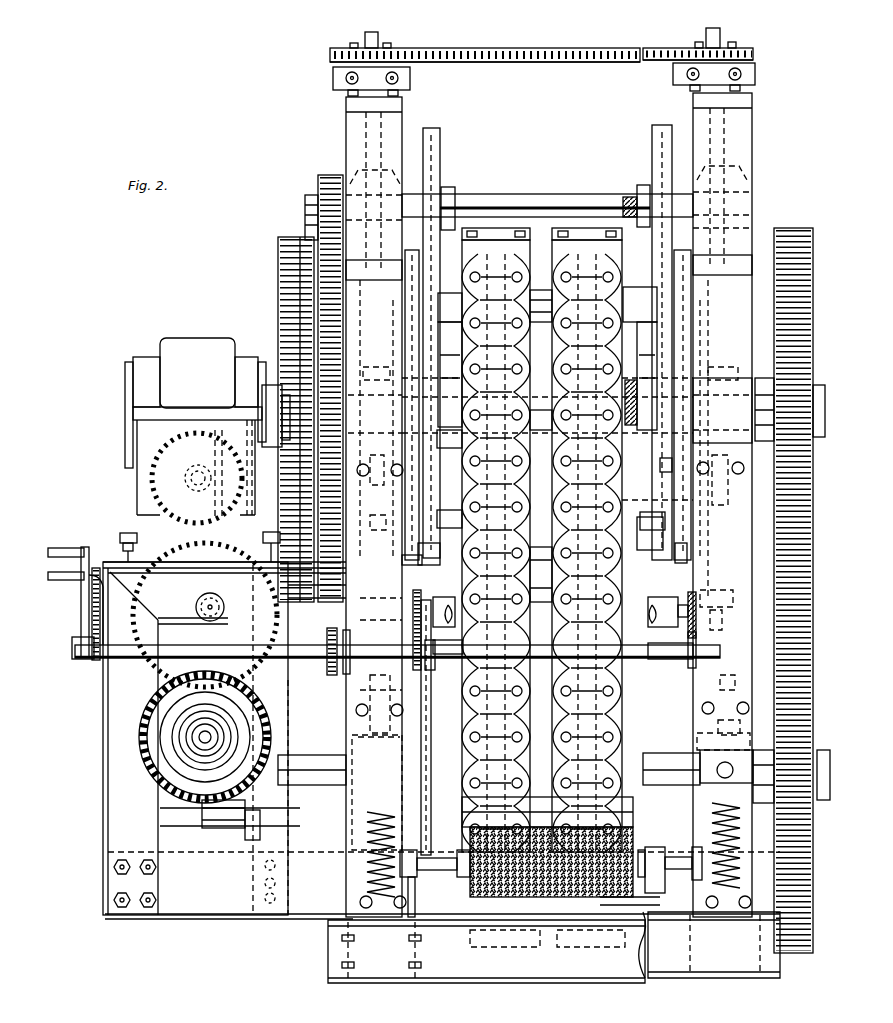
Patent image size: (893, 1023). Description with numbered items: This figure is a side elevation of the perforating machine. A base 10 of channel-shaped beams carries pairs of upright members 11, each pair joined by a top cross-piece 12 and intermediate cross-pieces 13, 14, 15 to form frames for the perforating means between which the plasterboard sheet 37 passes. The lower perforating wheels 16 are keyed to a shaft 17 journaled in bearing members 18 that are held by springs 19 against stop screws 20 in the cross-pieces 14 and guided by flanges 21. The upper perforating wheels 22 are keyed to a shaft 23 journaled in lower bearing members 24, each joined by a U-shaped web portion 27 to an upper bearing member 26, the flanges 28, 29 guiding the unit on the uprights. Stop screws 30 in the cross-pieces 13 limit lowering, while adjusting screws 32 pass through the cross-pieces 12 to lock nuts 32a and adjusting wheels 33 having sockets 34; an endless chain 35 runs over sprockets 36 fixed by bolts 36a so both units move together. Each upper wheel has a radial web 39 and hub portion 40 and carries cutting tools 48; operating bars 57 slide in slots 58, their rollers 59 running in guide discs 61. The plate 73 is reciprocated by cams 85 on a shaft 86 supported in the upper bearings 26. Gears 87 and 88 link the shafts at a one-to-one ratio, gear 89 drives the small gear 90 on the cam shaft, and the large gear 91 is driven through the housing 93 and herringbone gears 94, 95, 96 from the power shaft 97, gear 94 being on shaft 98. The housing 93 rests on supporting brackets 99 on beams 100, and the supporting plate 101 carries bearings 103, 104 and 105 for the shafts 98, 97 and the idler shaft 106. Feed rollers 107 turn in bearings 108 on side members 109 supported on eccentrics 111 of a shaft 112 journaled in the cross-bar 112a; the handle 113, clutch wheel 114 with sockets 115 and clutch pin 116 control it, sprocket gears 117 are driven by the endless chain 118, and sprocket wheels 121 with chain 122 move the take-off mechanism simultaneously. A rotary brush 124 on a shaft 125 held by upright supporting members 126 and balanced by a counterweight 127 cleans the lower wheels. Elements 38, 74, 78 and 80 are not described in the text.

The base 10 is at (525, 970).
The upright member 11 is at (352, 155).
The top cross-piece 12 is at (346, 100).
The intermediate cross-piece 13 is at (388, 456).
The intermediate cross-piece 14 is at (356, 709).
The intermediate cross-piece 15 is at (360, 900).
The lower perforating wheel 16 is at (530, 683).
The shaft 17 is at (665, 760).
The bearing member 18 is at (357, 737).
The spring 19 is at (367, 830).
The stop screw 20 is at (368, 688).
The flange 21 is at (350, 740).
The upper perforating wheel 22 is at (594, 320).
The shaft 23 is at (547, 369).
The lower bearing member 24 is at (750, 358).
The upper bearing member 26 is at (404, 180).
The U-shaped web portion 27 is at (393, 308).
The flange 28 is at (348, 370).
The flange 29 is at (346, 178).
The stop screw 30 is at (740, 490).
The adjusting screw 32 is at (376, 38).
The lock nut 32a is at (346, 115).
The adjusting wheel 33 is at (333, 77).
The socket 34 is at (400, 78).
The endless chain 35 is at (577, 48).
The sprocket 36 is at (402, 50).
The bolt 36a is at (355, 47).
The plasterboard sheet 37 is at (664, 591).
The bar 38 is at (541, 515).
The radial web 39 is at (547, 362).
The hub portion 40 is at (636, 402).
The cutting tool 48 is at (478, 232).
The operating bar 57 is at (650, 515).
The slot 58 is at (541, 314).
The roller 59 is at (450, 307).
The guide disc 61 is at (668, 346).
The plate 73 is at (414, 262).
The bracket 74 is at (420, 558).
The bracket 78 is at (660, 548).
The block 80 is at (660, 465).
The rotatable cam 85 is at (432, 167).
The shaft 86 is at (495, 208).
The gear 87 is at (800, 230).
The gear 88 is at (790, 600).
The gear 89 is at (305, 230).
The small gear 90 is at (326, 175).
The large gear 91 is at (262, 262).
The housing 93 is at (198, 358).
The herringbone gear 94 is at (158, 470).
The herringbone gear 95 is at (270, 676).
The herringbone gear 96 is at (202, 815).
The power shaft 97 is at (198, 748).
The shaft 98 is at (182, 488).
The supporting bracket 99 is at (108, 565).
The channel-shaped beam 100 is at (175, 917).
The supporting plate 101 is at (346, 600).
The bearing 103 is at (175, 505).
The bearing 104 is at (193, 768).
The bearing 105 is at (215, 586).
The shaft 106 is at (204, 606).
The roller 107 is at (661, 603).
The bearing 108 is at (395, 600).
The side member 109 is at (551, 618).
The eccentric 111 is at (455, 648).
The shaft 112 is at (455, 658).
The cross-bar 112a is at (700, 595).
The operating handle 113 is at (65, 548).
The clutch wheel 114 is at (92, 666).
The socket 115 is at (72, 658).
The clutch pin 116 is at (68, 585).
The sprocket gear 117 is at (440, 600).
The endless chain 118 is at (431, 700).
The sprocket wheel 121 is at (327, 640).
The endless chain 122 is at (295, 682).
The rotary brush 124 is at (633, 828).
The shaft 125 is at (660, 892).
The upright supporting member 126 is at (415, 885).
The counterweight 127 is at (630, 903).